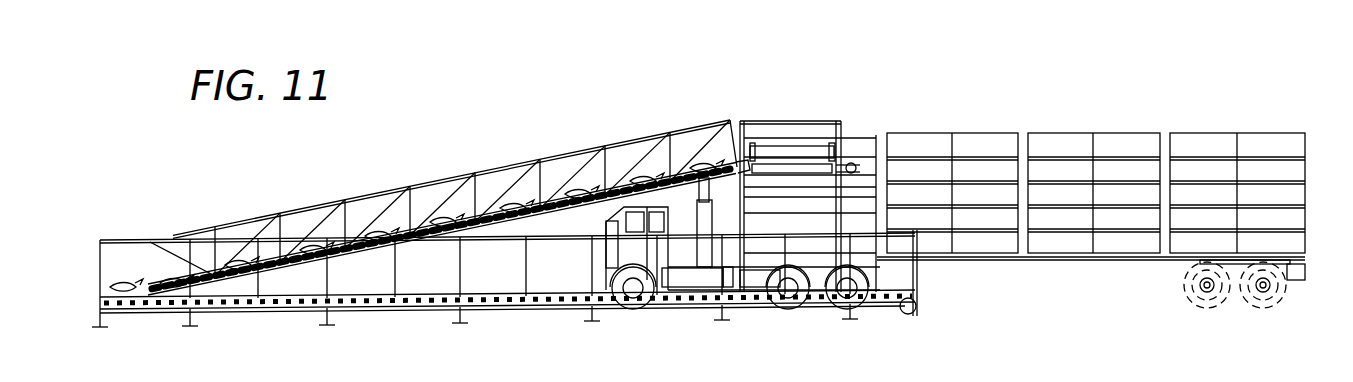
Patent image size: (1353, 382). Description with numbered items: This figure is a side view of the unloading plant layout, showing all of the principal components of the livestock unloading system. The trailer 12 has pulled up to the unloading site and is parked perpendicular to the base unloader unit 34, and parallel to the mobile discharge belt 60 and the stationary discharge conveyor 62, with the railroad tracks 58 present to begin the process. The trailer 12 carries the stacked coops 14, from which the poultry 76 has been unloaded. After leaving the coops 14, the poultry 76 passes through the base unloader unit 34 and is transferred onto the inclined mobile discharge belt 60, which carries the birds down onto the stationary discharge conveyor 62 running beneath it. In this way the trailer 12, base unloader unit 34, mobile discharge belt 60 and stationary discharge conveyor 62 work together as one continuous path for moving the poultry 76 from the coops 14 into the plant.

The trailer 12 is at (1027, 118).
The coops 14 is at (1096, 193).
The base unloader unit 34 is at (848, 123).
The railroad tracks 58 is at (880, 318).
The mobile discharge belt 60 is at (275, 256).
The stationary discharge conveyor 62 is at (128, 310).
The poultry 76 is at (188, 275).